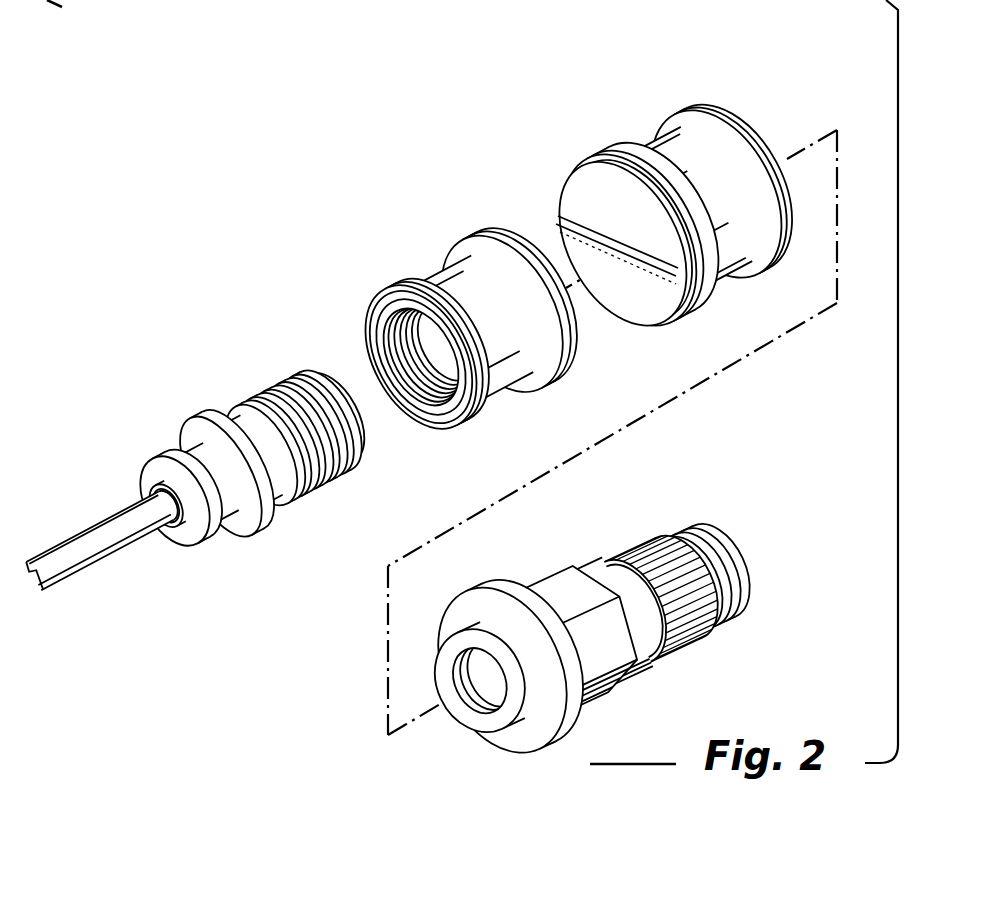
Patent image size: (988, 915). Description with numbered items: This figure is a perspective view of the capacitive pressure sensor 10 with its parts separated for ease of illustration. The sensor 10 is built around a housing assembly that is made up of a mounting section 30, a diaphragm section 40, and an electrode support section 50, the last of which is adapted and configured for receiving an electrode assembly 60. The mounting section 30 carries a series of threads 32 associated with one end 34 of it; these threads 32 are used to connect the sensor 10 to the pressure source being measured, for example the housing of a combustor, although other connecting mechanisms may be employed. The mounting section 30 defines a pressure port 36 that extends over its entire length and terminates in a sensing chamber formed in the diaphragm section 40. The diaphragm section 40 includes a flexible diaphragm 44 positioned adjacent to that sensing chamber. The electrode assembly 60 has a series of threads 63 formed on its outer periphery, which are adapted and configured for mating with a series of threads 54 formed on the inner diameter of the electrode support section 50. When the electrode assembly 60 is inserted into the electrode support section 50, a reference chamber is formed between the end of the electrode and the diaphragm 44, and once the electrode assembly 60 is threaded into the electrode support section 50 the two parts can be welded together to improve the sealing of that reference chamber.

The pressure sensor 10 is at (266, 289).
The mounting section 30 is at (532, 578).
The threads 32 is at (672, 535).
The end 34 is at (716, 540).
The pressure port 36 is at (478, 690).
The diaphragm section 40 is at (645, 126).
The flexible diaphragm 44 is at (588, 195).
The electrode support section 50 is at (412, 267).
The threads 54 is at (405, 413).
The electrode assembly 60 is at (185, 413).
The threads 63 is at (247, 400).